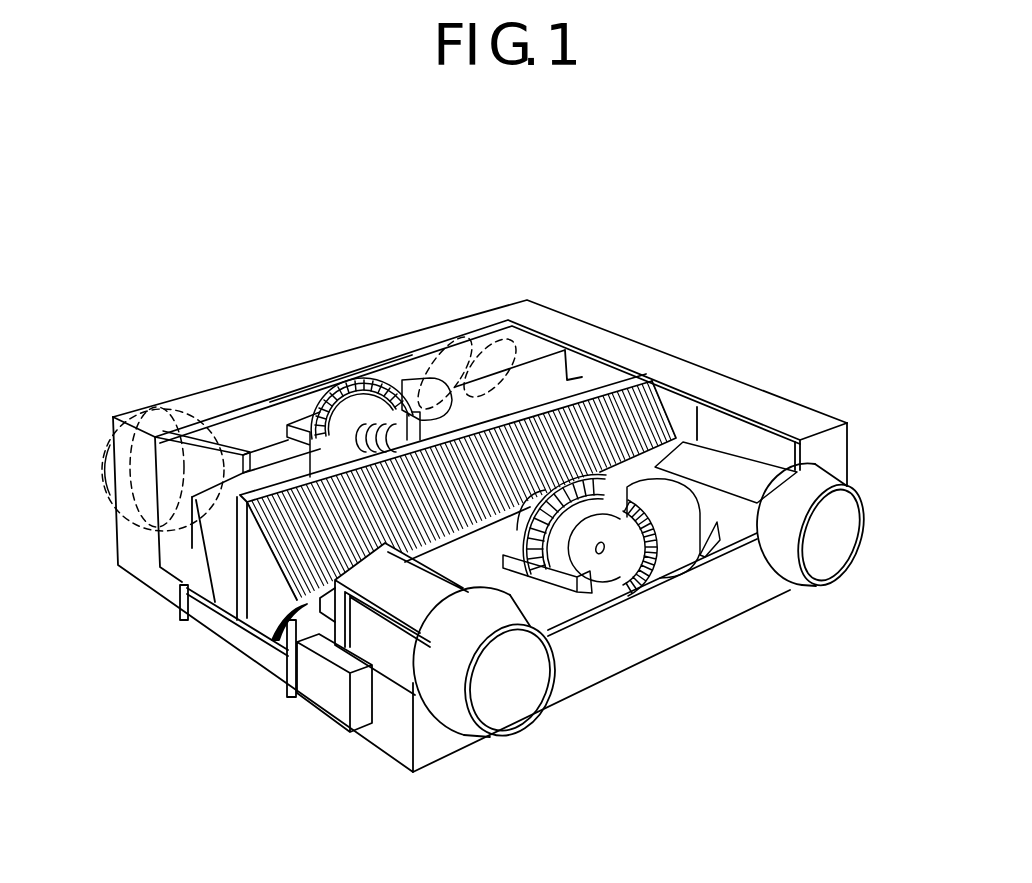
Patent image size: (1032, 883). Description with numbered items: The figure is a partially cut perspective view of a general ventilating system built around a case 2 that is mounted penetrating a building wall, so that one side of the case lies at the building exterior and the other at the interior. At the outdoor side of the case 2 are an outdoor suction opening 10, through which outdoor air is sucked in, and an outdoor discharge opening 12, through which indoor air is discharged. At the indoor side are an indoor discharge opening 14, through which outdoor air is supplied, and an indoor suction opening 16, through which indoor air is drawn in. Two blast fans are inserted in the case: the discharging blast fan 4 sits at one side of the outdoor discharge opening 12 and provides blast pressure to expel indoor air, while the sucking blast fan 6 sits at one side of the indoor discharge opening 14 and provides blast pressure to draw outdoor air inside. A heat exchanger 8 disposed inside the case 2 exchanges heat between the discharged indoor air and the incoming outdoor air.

The case 2 is at (785, 408).
The discharging blast fan 4 is at (322, 398).
The sucking blast fan 6 is at (618, 551).
The heat exchanger 8 is at (640, 412).
The outdoor suction opening 10 is at (103, 460).
The outdoor discharge opening 12 is at (413, 345).
The indoor discharge opening 14 is at (560, 653).
The indoor suction opening 16 is at (845, 510).